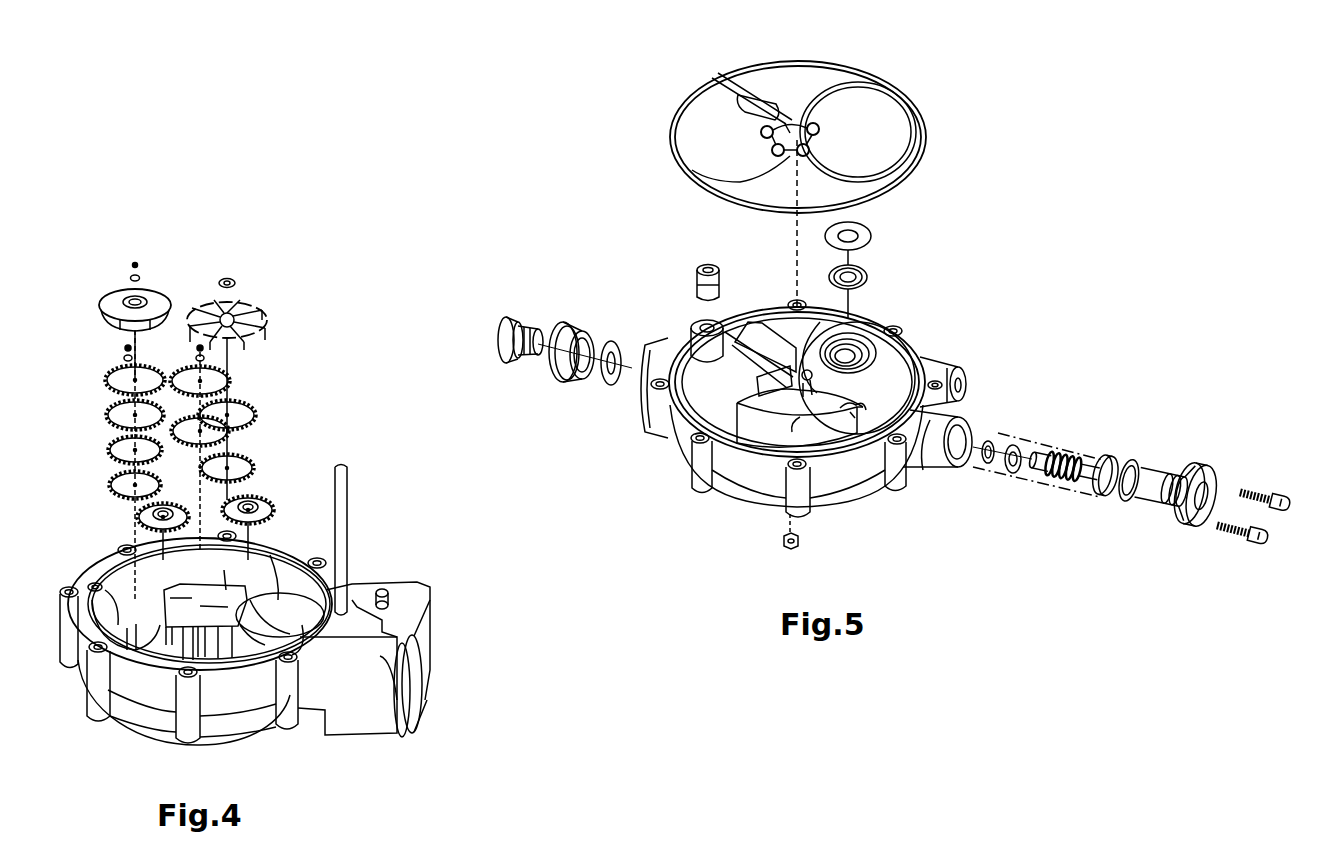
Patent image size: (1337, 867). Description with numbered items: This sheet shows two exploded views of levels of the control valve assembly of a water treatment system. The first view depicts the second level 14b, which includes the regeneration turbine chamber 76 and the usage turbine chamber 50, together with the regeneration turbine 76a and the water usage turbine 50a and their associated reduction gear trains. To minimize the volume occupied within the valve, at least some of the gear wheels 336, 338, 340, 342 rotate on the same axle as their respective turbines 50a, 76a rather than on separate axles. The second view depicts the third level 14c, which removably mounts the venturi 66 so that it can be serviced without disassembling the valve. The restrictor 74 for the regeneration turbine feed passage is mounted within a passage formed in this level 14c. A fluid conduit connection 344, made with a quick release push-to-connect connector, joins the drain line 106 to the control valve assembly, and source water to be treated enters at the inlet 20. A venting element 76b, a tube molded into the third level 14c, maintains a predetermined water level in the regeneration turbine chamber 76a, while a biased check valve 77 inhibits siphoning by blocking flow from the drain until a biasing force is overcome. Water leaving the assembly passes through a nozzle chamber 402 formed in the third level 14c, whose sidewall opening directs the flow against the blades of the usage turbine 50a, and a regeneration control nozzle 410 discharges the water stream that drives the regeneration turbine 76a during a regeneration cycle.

In FIG. 4, the second level 14b is at (97, 731).
In FIG. 5, the third level 14c is at (934, 329).
In FIG. 4, the inlet 20 is at (247, 645).
In FIG. 5, the inlet 20 is at (772, 310).
In FIG. 4, the usage turbine chamber 50 is at (282, 548).
In FIG. 4, the water usage turbine 50a is at (250, 308).
In FIG. 4, the regeneration turbine chamber 76 is at (118, 607).
In FIG. 4, the regeneration turbine 76a is at (119, 298).
In FIG. 5, the venting element 76b is at (681, 298).
In FIG. 5, the check valve 77 is at (706, 265).
In FIG. 4, the gear wheel 336 is at (244, 460).
In FIG. 4, the gear wheel 338 is at (249, 405).
In FIG. 4, the gear wheel 340 is at (107, 414).
In FIG. 4, the gear wheel 342 is at (109, 483).
In FIG. 5, the connection 344 is at (567, 290).
In FIG. 5, the drain line 106 is at (480, 331).
In FIG. 5, the venturi 66 is at (1094, 432).
In FIG. 5, the restrictor 74 is at (800, 542).
In FIG. 5, the nozzle chamber 402 is at (800, 417).
In FIG. 5, the regeneration control nozzle 410 is at (693, 436).